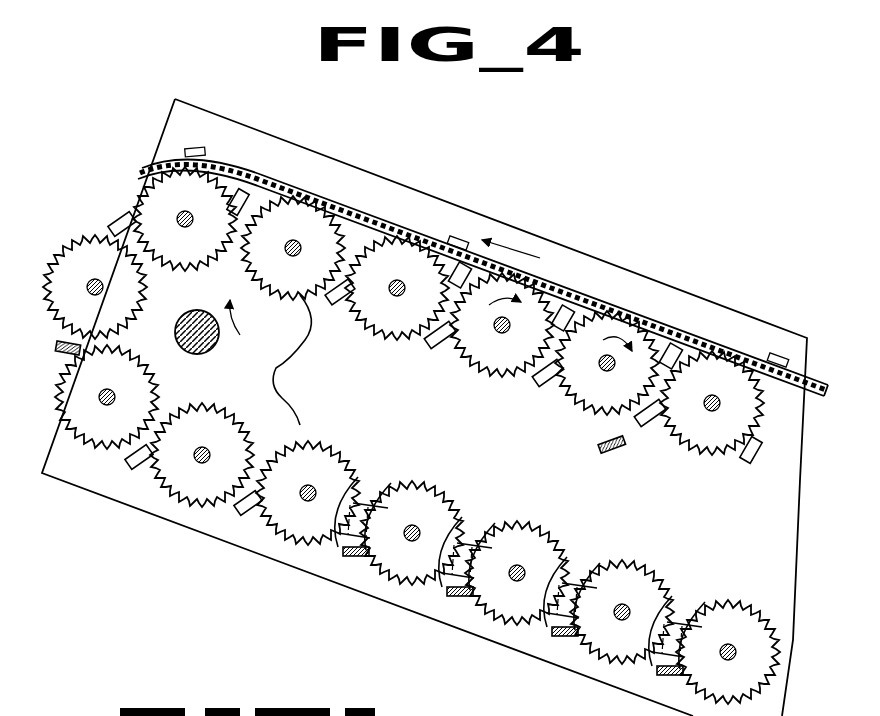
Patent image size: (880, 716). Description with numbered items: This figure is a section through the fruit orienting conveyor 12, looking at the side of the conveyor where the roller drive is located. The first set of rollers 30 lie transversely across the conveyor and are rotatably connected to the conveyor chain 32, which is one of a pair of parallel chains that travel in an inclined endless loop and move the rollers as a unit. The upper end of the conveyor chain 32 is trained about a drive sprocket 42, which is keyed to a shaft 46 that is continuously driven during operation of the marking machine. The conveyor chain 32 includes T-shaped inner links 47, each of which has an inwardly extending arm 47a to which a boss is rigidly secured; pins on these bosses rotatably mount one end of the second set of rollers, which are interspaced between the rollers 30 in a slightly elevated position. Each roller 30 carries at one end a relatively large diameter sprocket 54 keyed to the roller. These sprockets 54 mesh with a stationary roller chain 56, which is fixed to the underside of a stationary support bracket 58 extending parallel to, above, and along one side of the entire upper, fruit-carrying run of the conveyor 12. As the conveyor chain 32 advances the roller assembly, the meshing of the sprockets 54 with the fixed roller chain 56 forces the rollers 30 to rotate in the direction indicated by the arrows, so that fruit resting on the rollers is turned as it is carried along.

The conveyor 12 is at (594, 290).
The first set of rollers 30 is at (509, 326).
The conveyor chain 32 is at (450, 347).
The drive sprocket 42 is at (276, 368).
The shaft 46 is at (197, 354).
The T-shaped inner links 47 is at (760, 432).
The inwardly extending arm 47a is at (357, 214).
The sprocket 54 is at (72, 372).
The stationary roller chain 56 is at (432, 234).
The stationary support bracket 58 is at (392, 222).